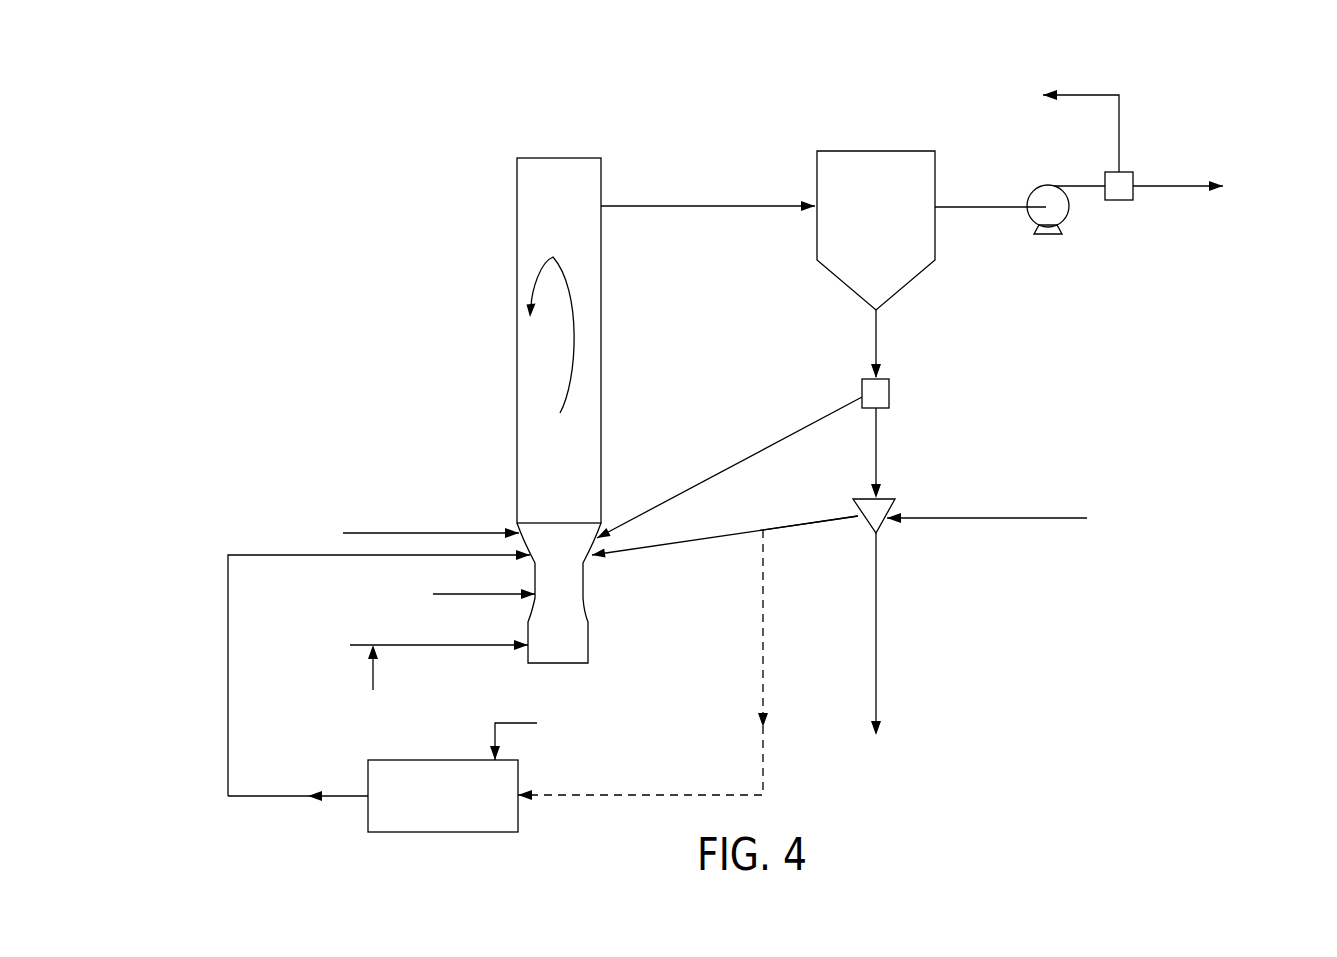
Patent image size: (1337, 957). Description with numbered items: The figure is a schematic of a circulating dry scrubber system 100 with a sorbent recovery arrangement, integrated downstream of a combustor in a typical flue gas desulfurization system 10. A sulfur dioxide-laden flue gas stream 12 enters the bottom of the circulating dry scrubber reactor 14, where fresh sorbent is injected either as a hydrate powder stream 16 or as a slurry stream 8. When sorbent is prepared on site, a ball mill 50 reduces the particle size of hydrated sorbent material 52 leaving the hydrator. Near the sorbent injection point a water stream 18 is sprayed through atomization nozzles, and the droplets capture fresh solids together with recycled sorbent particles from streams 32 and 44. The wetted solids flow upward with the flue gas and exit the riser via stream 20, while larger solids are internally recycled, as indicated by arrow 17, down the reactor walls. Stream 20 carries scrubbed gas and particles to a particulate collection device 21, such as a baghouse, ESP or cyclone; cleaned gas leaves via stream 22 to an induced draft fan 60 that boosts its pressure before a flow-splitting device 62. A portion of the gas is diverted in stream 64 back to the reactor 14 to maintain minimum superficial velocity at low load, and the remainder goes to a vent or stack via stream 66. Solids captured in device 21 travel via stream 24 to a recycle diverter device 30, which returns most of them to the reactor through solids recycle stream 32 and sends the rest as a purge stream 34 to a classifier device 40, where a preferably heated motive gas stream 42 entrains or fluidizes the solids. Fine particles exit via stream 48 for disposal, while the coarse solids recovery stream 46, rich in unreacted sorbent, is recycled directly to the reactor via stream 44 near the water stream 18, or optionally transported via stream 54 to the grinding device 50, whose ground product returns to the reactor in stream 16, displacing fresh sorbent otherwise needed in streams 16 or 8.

The circulating dry scrubber system 100 is at (330, 115).
The flue gas desulfurization system 10 is at (789, 162).
The circulating dry scrubber reactor 14 is at (556, 158).
The internal recycle arrow 17 is at (553, 255).
The reactor exit stream 20 is at (640, 206).
The particulate collection device 21 is at (873, 151).
The filtered flue gas stream 22 is at (950, 207).
The induced draft fan 60 is at (1048, 185).
The flow-splitting device 62 is at (1119, 200).
The recycled flue gas stream 64 is at (1100, 94).
The vent or stack stream 66 is at (1165, 186).
The captured solids stream 24 is at (878, 338).
The recycle diverter device 30 is at (889, 393).
The solids recycle stream 32 is at (722, 470).
The purge stream 34 is at (878, 436).
The classifier device 40 is at (892, 500).
The heated motive gas stream 42 is at (990, 518).
The direct recycle stream 44 is at (672, 546).
The coarse solids recovery stream 46 is at (800, 524).
The fine particles stream 48 is at (878, 640).
The recycled sorbent stream to grinder 54 is at (765, 640).
The water stream 18 is at (378, 533).
The hydrate powder stream 16 is at (470, 556).
The slurry stream 8 is at (451, 597).
The flue gas stream 12 is at (470, 648).
The hydrated sorbent material 52 is at (505, 723).
The ball mill 50 is at (518, 818).